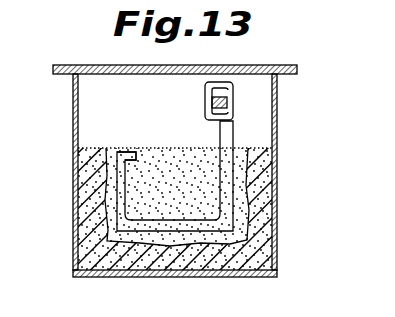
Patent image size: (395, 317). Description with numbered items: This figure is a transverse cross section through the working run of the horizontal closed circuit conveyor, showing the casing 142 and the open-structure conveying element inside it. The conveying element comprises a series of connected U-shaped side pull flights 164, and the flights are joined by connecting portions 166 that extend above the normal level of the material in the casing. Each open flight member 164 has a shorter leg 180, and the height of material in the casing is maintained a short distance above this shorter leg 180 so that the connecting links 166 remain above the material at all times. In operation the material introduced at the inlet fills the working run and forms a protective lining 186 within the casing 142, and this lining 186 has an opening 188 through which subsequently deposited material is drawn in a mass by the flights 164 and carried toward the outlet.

The container wall 142 is at (279, 248).
The protective lining 186 is at (232, 257).
The U-shaped side pull flight 164 is at (227, 188).
The opening 188 is at (195, 172).
The shorter leg 180 is at (145, 125).
The connecting portion 166 is at (234, 102).